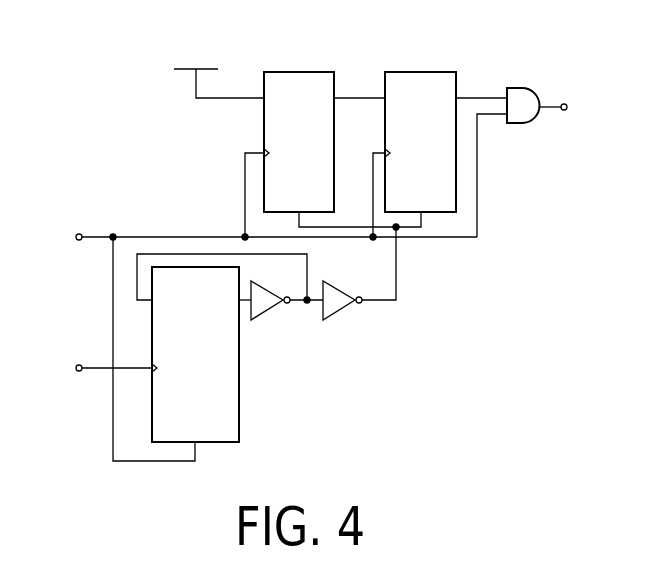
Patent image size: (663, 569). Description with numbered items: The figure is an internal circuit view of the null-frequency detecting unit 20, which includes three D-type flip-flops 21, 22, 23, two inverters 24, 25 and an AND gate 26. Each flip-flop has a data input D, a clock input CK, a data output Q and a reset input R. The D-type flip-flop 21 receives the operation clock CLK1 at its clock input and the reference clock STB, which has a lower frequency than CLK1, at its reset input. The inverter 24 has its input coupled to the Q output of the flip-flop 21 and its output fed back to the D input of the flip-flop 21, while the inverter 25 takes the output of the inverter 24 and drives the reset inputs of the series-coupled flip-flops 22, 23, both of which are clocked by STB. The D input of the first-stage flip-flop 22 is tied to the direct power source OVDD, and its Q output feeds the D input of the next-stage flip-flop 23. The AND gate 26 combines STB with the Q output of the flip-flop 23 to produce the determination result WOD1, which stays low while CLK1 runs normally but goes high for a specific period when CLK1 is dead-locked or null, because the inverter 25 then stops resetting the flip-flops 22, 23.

The null-frequency detecting unit 20 is at (527, 451).
The D-type flip-flop 21 is at (239, 418).
The D-type flip-flop 22 is at (300, 72).
The D-type flip-flop 23 is at (421, 72).
The inverter 24 is at (268, 310).
The inverter 25 is at (340, 310).
The AND gate 26 is at (518, 88).